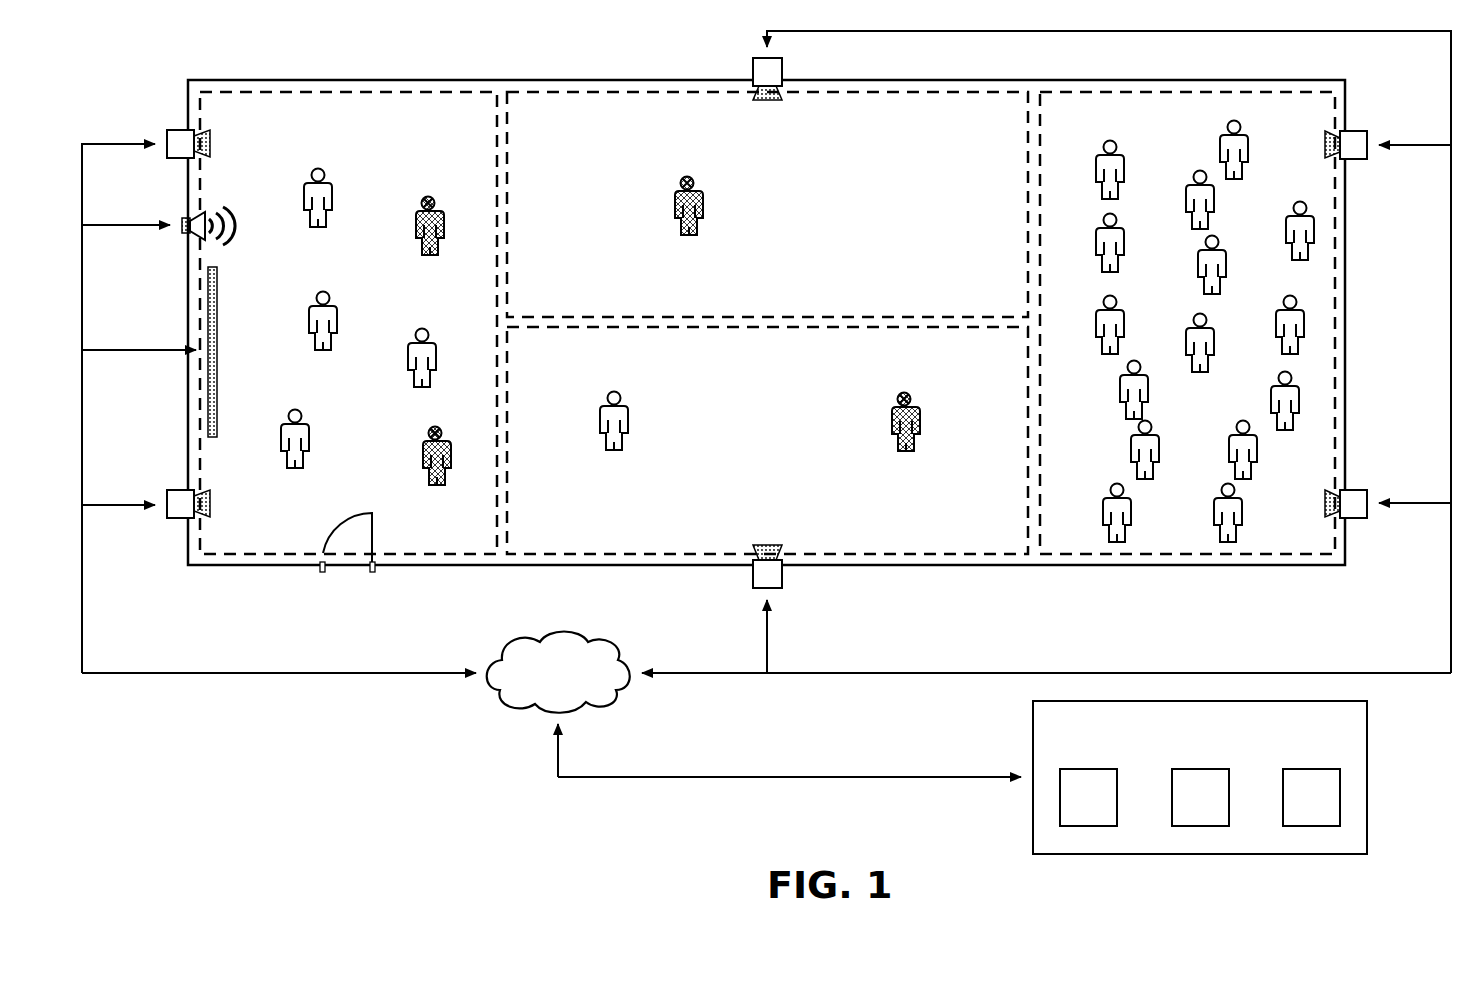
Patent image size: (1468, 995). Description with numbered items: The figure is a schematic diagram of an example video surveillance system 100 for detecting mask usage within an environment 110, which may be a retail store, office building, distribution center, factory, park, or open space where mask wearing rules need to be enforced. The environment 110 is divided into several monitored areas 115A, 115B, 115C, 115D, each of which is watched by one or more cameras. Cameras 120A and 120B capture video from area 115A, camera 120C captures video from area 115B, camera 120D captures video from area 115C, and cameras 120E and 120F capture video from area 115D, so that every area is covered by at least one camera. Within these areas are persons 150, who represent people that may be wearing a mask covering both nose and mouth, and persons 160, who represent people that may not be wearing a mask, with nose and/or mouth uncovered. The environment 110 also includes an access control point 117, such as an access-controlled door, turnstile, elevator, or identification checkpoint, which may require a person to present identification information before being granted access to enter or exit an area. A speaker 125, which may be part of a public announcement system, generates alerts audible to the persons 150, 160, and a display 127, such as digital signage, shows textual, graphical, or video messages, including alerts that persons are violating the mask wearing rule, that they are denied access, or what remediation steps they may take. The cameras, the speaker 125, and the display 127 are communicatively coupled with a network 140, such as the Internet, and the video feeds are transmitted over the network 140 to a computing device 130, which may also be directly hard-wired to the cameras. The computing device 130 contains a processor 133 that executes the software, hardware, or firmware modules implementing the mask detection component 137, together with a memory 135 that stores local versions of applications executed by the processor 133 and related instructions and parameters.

The video surveillance system 100 is at (140, 72).
The environment 110 is at (482, 76).
The area 115A is at (348, 323).
The area 115B is at (767, 204).
The area 115C is at (767, 440).
The area 115D is at (1187, 323).
The access control point 117 is at (374, 535).
The camera 120A is at (168, 128).
The camera 120B is at (168, 486).
The camera 120C is at (755, 62).
The camera 120D is at (752, 586).
The camera 120E is at (1366, 138).
The camera 120F is at (1368, 498).
The speaker 125 is at (182, 212).
The display 127 is at (206, 310).
The computing device 130 is at (1200, 777).
The processor 133 is at (1088, 797).
The memory 135 is at (1200, 797).
The mask detection component 137 is at (1311, 797).
The network 140 is at (558, 672).
The persons 150 is at (307, 186).
The persons 160 is at (420, 211).